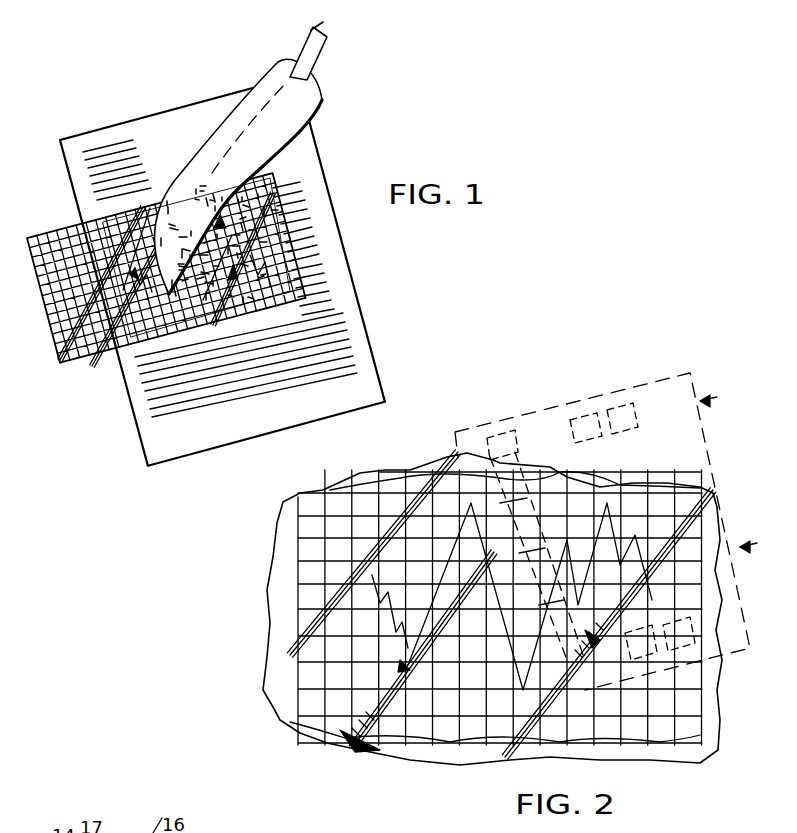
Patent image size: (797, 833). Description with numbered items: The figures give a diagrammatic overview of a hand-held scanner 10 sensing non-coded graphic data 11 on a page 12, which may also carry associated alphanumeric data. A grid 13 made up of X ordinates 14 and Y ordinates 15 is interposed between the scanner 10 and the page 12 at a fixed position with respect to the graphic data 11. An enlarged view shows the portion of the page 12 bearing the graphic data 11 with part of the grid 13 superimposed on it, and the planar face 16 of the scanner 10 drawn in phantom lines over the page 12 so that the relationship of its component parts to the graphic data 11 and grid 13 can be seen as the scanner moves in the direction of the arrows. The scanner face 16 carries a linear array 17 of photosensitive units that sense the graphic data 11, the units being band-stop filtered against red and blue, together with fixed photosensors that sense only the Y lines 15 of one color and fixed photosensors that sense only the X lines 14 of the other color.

In FIG. 1, the hand-held scanner 10 is at (230, 90).
In FIG. 1, the non-coded graphic data 11 is at (97, 360).
In FIG. 2, the non-coded graphic data 11 is at (318, 745).
In FIG. 1, the page 12 is at (131, 428).
In FIG. 2, the page 12 is at (282, 690).
In FIG. 1, the grid 13 is at (44, 232).
In FIG. 2, the grid 13 is at (383, 475).
In FIG. 1, the X ordinates 14 is at (60, 312).
In FIG. 2, the X ordinates 14 is at (430, 470).
In FIG. 1, the Y ordinates 15 is at (68, 367).
In FIG. 2, the Y ordinates 15 is at (370, 510).
In FIG. 2, the planar face 16 is at (573, 405).
In FIG. 2, the linear array of photosensitive units 17 is at (512, 432).